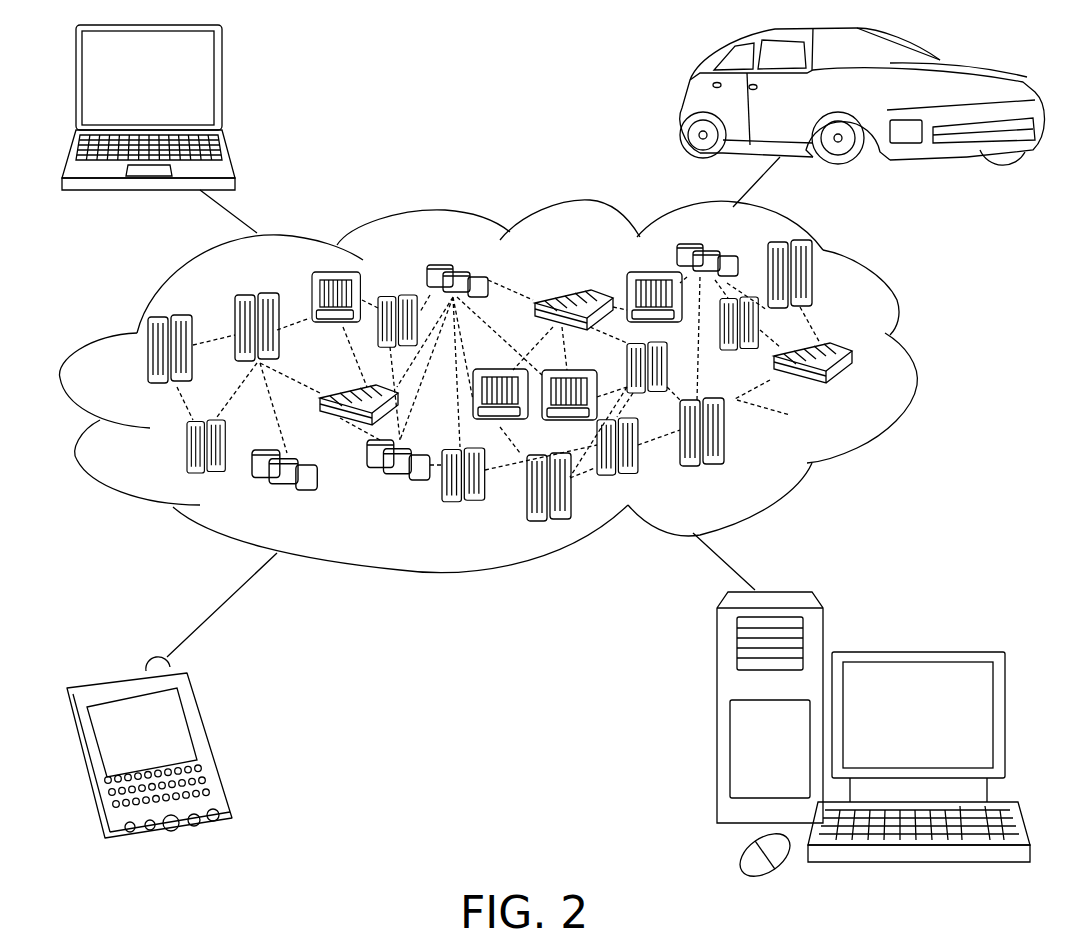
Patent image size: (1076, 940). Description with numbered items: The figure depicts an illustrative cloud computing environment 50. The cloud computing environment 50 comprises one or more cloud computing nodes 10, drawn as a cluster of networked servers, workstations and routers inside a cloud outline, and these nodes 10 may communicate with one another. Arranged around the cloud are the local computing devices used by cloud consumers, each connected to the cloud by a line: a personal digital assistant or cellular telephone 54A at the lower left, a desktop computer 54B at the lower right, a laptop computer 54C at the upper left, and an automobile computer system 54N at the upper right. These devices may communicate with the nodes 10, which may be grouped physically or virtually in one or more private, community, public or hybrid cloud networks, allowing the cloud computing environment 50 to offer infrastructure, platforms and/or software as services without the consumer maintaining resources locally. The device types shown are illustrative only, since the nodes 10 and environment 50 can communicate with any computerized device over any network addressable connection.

The cloud computing node 10 is at (870, 398).
The cloud computing environment 50 is at (918, 362).
The personal digital assistant or cellular telephone 54A is at (212, 745).
The desktop computer 54B is at (917, 648).
The laptop computer 54C is at (220, 87).
The automobile computer system 54N is at (683, 102).